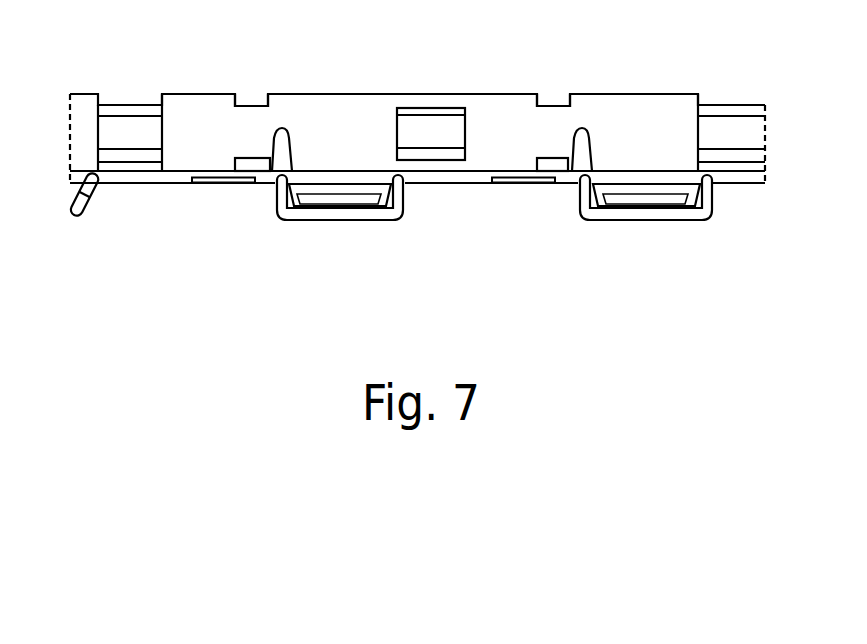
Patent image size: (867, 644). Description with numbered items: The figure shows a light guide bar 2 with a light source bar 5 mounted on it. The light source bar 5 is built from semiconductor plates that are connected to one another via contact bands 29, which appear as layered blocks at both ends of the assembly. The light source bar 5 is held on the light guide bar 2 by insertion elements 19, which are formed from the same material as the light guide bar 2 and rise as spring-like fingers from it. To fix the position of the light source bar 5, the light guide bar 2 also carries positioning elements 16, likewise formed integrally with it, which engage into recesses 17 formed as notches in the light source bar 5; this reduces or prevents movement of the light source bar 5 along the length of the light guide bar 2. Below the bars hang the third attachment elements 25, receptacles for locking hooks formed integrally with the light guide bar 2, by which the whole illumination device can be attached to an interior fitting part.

The light guide bar 2 is at (130, 176).
The light source bar 5 is at (203, 125).
The positioning elements 16 is at (257, 145).
The recesses 17 is at (250, 97).
The insertion elements 19 is at (279, 163).
The third attachment elements 25 is at (330, 214).
The contact bands 29 is at (140, 127).